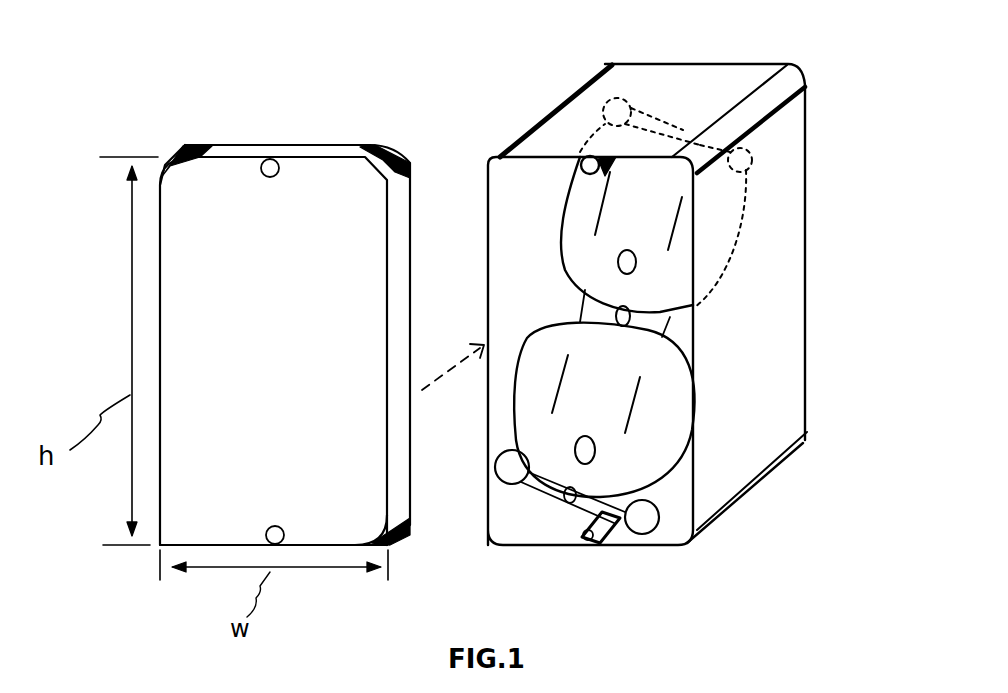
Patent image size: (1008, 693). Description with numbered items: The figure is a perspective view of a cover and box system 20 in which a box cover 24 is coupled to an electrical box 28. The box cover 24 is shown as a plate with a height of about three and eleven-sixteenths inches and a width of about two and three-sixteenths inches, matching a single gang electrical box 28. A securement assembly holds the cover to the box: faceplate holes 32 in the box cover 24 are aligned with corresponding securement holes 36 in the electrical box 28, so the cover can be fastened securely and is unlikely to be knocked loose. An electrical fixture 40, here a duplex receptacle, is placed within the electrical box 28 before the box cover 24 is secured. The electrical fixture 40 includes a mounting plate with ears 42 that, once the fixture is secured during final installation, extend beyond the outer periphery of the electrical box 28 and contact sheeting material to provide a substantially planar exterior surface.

The cover and box system 20 is at (366, 38).
The box cover 24 is at (341, 135).
The electrical box 28 is at (812, 100).
The faceplate holes 32 is at (266, 178).
The securement holes 36 is at (577, 88).
The electrical fixture 40 is at (518, 420).
The ears 42 is at (628, 100).